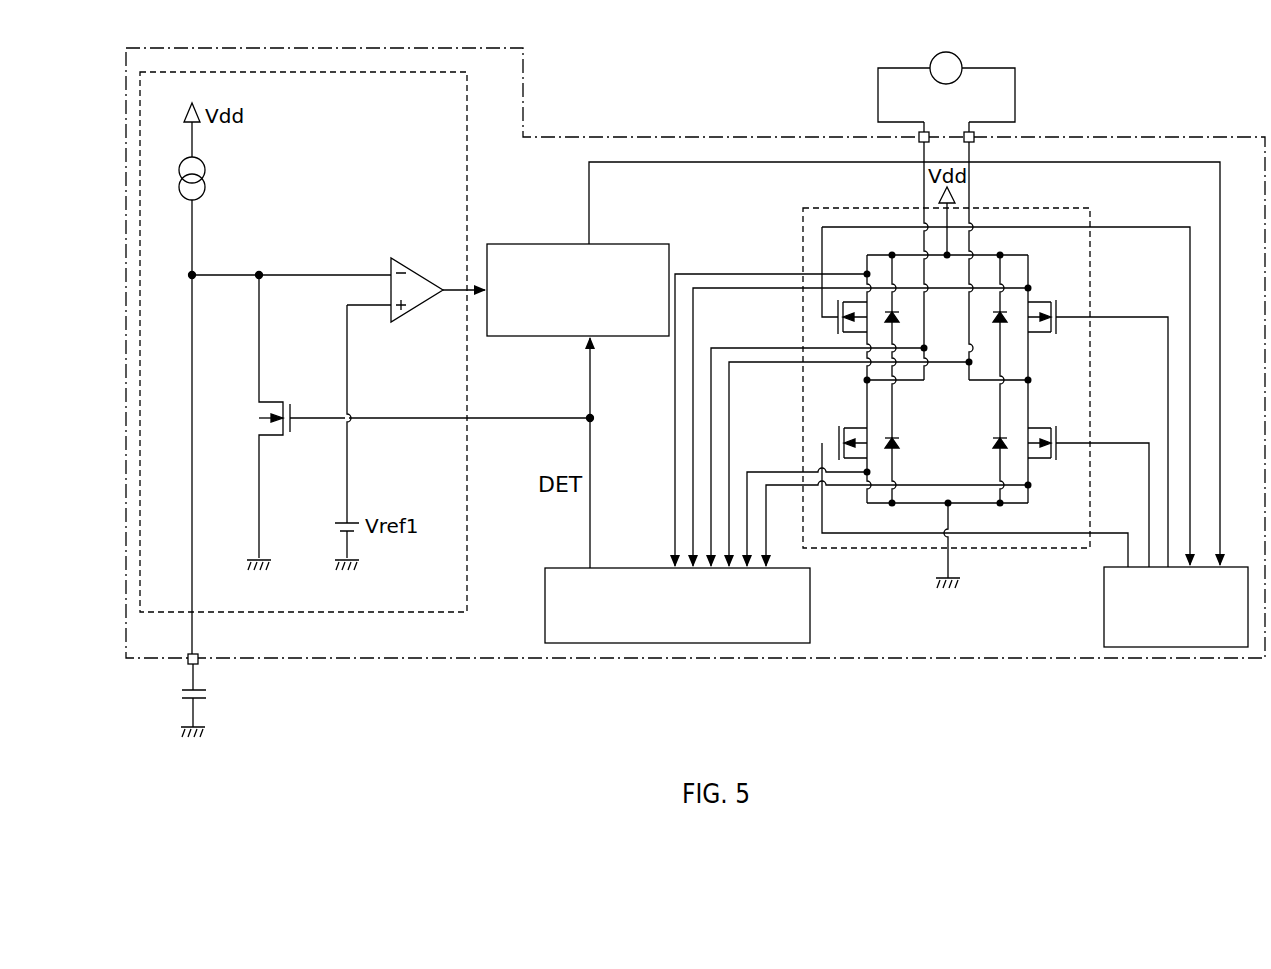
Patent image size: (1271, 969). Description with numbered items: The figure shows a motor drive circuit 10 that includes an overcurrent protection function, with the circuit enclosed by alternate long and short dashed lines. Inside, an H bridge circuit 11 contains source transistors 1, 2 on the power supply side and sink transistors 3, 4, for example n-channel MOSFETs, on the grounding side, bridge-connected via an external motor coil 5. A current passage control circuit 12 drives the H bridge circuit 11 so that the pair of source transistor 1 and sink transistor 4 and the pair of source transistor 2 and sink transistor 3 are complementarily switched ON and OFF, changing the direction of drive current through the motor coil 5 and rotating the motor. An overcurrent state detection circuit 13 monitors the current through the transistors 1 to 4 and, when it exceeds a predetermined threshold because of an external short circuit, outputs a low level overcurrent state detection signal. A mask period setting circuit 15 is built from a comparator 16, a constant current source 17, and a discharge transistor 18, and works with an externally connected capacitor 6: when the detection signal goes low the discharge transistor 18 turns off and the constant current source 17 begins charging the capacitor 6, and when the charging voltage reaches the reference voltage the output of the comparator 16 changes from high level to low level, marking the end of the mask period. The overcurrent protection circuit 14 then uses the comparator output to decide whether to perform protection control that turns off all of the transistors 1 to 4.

The source transistor 1 is at (847, 336).
The source transistor 2 is at (1050, 303).
The sink transistor 3 is at (852, 428).
The sink transistor 4 is at (1052, 428).
The motor coil 5 is at (962, 58).
The capacitor 6 is at (197, 688).
The motor drive circuit 10 is at (1123, 137).
The H bridge circuit 11 is at (1055, 208).
The current passage control circuit 12 is at (1104, 603).
The overcurrent state detection circuit 13 is at (545, 605).
The overcurrent protection circuit 14 is at (620, 244).
The mask period setting circuit 15 is at (467, 173).
The comparator 16 is at (418, 271).
The constant current source 17 is at (204, 166).
The discharge transistor 18 is at (283, 402).